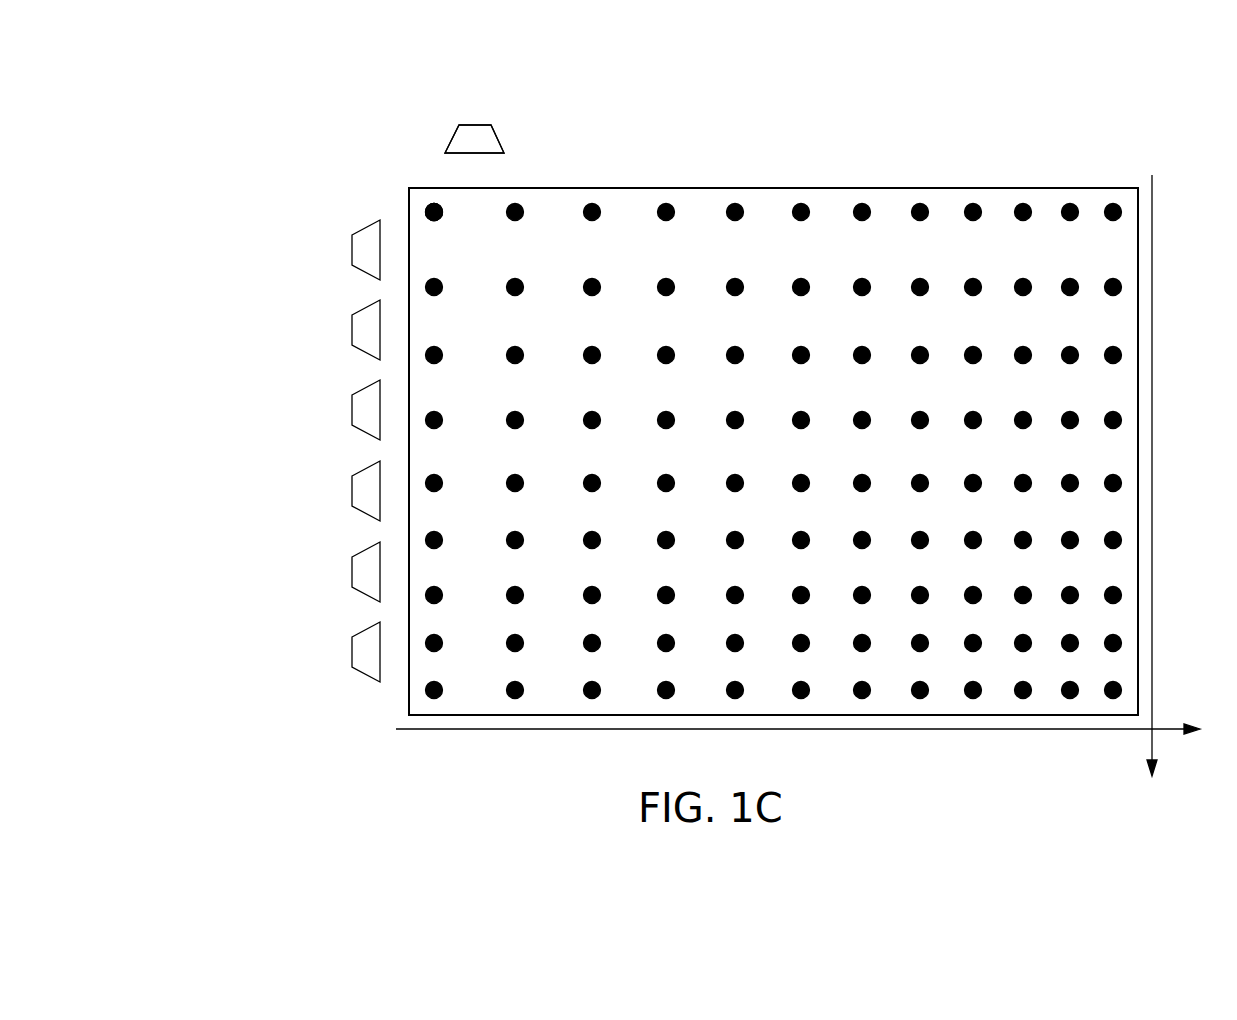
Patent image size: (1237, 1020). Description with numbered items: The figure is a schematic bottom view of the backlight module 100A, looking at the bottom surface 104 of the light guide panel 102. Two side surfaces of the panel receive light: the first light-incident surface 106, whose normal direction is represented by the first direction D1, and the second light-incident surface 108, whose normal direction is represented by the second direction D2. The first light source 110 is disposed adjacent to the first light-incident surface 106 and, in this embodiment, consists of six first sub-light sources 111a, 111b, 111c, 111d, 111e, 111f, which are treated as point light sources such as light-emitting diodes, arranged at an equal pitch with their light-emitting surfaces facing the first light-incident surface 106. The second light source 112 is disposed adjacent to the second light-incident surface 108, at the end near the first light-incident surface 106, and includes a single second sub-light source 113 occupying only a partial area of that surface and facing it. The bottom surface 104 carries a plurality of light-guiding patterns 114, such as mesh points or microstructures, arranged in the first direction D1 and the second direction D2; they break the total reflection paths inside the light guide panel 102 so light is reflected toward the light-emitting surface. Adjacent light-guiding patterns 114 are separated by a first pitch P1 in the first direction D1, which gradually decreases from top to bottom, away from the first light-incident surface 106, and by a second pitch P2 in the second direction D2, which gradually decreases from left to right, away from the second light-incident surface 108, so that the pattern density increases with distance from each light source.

The backlight module 100A is at (266, 71).
The light guide panel 102 is at (1085, 188).
The bottom surface 104 is at (630, 188).
The first light-incident surface 106 is at (406, 198).
The second light-incident surface 108 is at (428, 188).
The first light source 110 is at (289, 451).
The first sub-light source 111a is at (352, 249).
The first sub-light source 111b is at (352, 329).
The first sub-light source 111c is at (352, 409).
The first sub-light source 111d is at (352, 490).
The first sub-light source 111e is at (352, 571).
The first sub-light source 111f is at (321, 652).
The second light source 112 is at (505, 94).
The second sub-light source 113 is at (477, 124).
The light-guiding patterns 114 is at (440, 198).
The first pitch P1 is at (515, 234).
The second pitch P2 is at (412, 212).
The first direction D1 is at (1172, 729).
The second direction D2 is at (1150, 748).